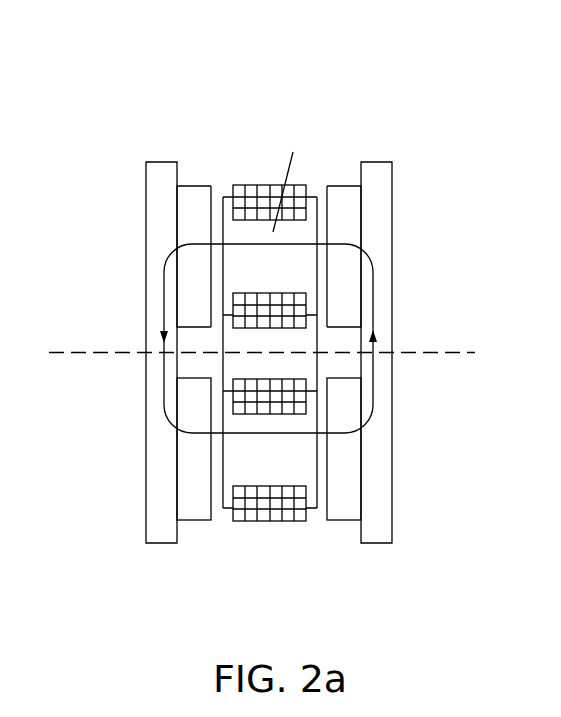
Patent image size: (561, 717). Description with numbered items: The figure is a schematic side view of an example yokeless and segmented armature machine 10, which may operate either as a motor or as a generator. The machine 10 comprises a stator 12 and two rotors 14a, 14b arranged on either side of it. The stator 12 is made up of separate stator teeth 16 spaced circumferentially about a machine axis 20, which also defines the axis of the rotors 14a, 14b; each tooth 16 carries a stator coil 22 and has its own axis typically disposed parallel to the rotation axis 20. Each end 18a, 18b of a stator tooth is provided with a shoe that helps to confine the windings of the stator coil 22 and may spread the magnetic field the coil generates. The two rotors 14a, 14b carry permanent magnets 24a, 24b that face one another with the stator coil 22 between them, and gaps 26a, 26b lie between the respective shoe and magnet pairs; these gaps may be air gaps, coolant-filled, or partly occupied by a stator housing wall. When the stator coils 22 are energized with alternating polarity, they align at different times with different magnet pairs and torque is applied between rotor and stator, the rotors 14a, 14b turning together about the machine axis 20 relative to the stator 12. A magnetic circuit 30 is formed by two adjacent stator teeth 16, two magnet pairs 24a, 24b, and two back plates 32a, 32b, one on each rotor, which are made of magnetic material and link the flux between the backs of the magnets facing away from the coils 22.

The yokeless and segmented armature machine 10 is at (313, 79).
The stator 12 is at (257, 535).
The rotor 14a is at (162, 543).
The rotor 14b is at (375, 543).
The stator tooth 16 is at (273, 232).
The end of stator tooth 18a is at (223, 195).
The end of stator tooth 18b is at (317, 197).
The machine axis 20 is at (112, 350).
The stator coil 22 is at (245, 193).
The permanent magnet 24a is at (190, 290).
The permanent magnet 24b is at (343, 299).
The gap 26a is at (220, 193).
The gap 26b is at (320, 212).
The magnetic circuit 30 is at (376, 393).
The back plate 32a is at (159, 510).
The back plate 32b is at (378, 507).